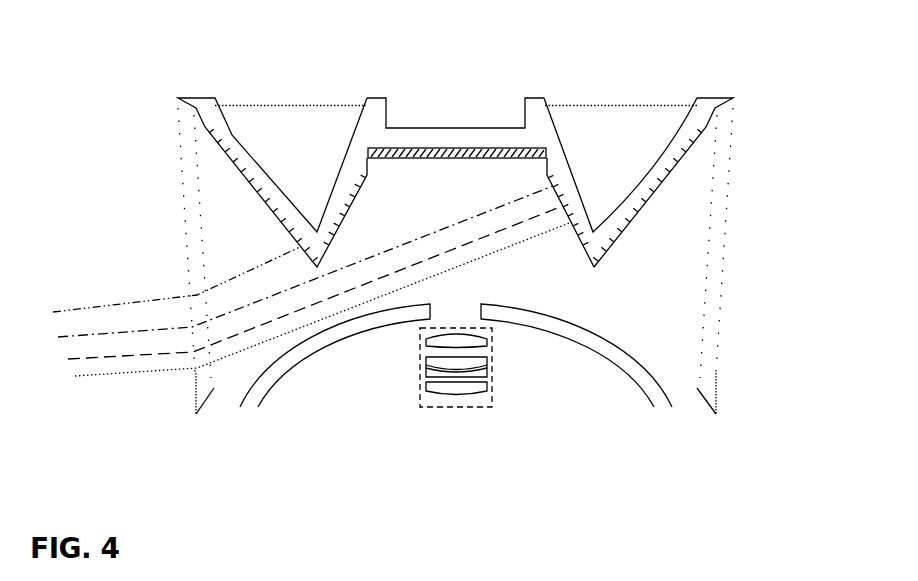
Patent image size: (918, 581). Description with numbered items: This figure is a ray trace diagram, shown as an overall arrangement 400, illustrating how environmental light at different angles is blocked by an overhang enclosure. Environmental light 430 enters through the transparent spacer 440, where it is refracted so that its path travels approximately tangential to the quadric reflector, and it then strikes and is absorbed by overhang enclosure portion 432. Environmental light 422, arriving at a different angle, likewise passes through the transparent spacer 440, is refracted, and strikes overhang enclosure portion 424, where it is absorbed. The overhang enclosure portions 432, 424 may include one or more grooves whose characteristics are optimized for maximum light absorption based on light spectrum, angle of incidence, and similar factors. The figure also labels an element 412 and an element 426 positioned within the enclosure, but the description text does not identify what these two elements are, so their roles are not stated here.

The optical sensing system 400 is at (862, 71).
The light emitter 412 is at (445, 159).
The environmental light 422 is at (507, 247).
The overhang enclosure portion 424 is at (574, 230).
The lens assembly 426 is at (491, 367).
The environmental light 430 is at (140, 303).
The overhang enclosure portion 432 is at (272, 216).
The transparent spacer 440 is at (183, 198).